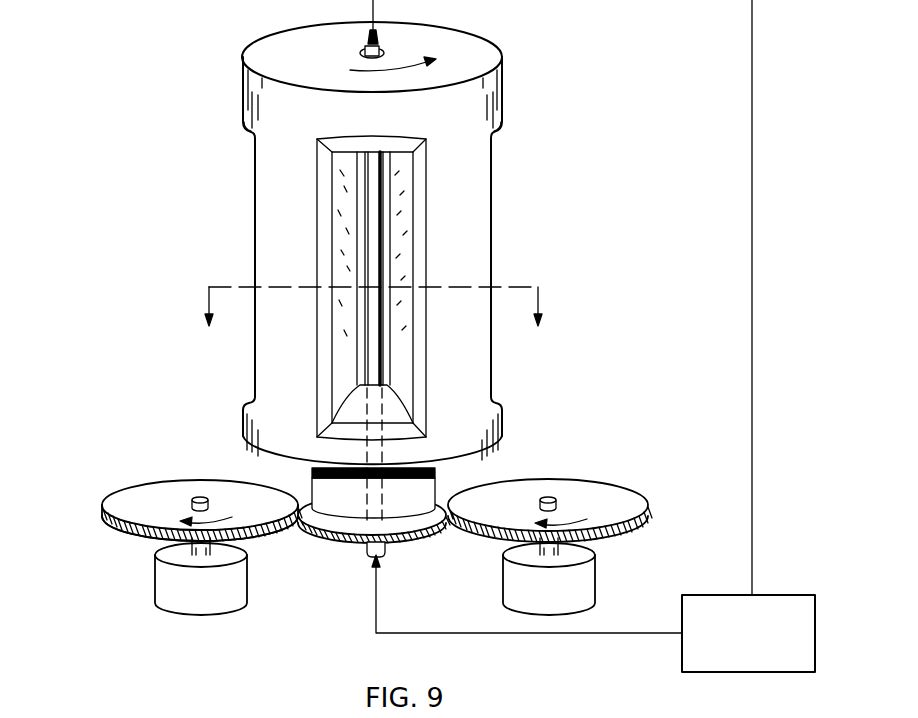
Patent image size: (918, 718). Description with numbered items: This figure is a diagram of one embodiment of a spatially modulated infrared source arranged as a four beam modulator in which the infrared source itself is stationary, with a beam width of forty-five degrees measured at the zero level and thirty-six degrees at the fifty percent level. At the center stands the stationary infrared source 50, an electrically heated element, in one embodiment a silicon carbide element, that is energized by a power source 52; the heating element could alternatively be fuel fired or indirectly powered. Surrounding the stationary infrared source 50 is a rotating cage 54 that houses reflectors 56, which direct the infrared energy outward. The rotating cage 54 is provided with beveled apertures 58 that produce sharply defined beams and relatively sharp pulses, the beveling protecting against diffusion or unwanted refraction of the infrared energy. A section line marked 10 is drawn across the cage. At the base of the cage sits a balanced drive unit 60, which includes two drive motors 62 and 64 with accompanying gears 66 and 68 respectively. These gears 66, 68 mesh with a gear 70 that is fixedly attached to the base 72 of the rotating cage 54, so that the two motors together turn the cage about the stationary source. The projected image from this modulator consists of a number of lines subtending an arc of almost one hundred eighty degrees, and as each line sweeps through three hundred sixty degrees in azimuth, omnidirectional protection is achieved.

The rotating cage 54 is at (502, 86).
The beveled apertures 58 is at (247, 131).
The infrared source 50 is at (373, 244).
The reflectors 56 is at (347, 284).
The section line 10- 10 is at (373, 318).
The balanced drive unit 60 is at (411, 509).
The gear 70 is at (330, 536).
The base 72 is at (438, 487).
The gear 66 is at (161, 484).
The gear 68 is at (606, 498).
The drive motor 62 is at (247, 577).
The drive motor 64 is at (596, 579).
The power source 52 is at (593, 336).